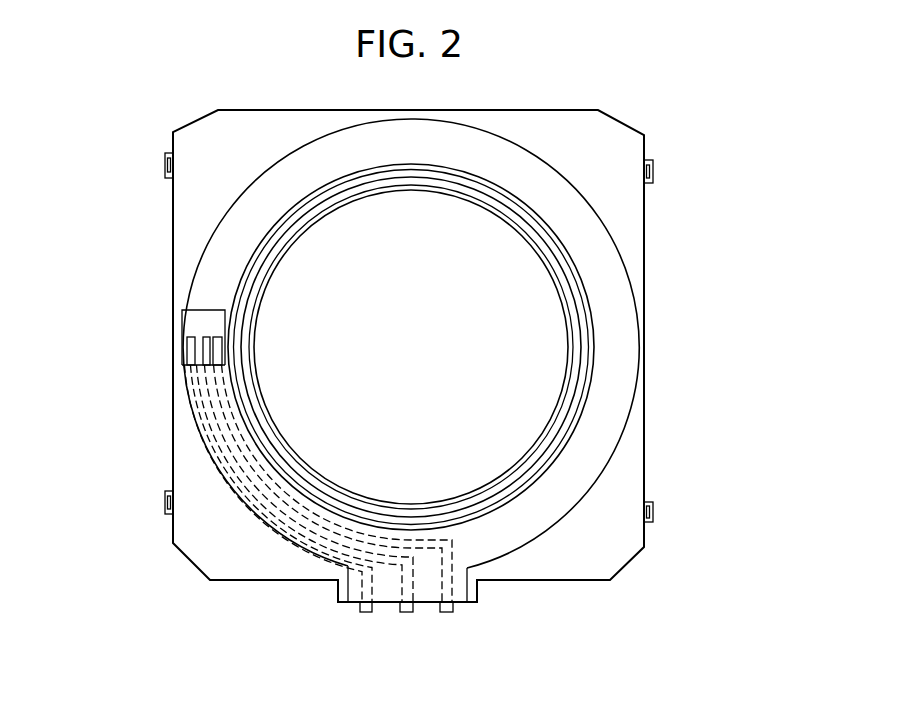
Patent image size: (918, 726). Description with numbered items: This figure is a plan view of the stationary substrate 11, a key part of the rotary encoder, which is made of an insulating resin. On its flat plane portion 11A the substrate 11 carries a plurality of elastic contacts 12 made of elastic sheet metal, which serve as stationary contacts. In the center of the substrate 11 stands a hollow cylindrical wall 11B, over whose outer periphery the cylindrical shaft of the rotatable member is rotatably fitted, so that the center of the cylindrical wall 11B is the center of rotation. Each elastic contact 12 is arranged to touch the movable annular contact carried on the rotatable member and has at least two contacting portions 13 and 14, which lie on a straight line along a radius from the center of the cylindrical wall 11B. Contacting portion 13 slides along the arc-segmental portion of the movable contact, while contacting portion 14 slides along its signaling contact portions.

The stationary substrate 11 is at (755, 255).
The flat plane portion 11A is at (620, 367).
The hollow cylindrical wall 11B is at (575, 315).
The elastic contact 12 is at (112, 232).
The contacting portion 13 is at (190, 340).
The contacting portion 14 is at (205, 338).